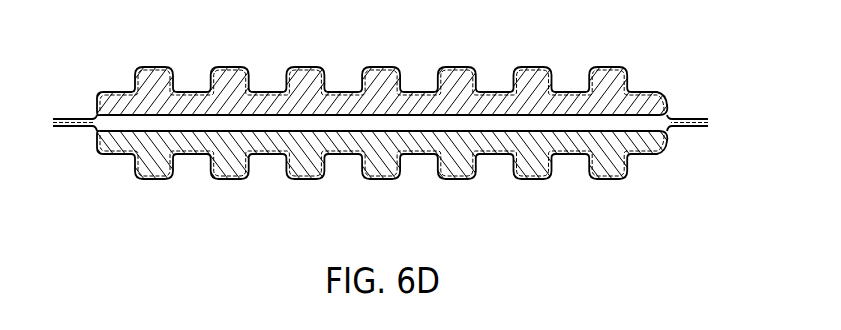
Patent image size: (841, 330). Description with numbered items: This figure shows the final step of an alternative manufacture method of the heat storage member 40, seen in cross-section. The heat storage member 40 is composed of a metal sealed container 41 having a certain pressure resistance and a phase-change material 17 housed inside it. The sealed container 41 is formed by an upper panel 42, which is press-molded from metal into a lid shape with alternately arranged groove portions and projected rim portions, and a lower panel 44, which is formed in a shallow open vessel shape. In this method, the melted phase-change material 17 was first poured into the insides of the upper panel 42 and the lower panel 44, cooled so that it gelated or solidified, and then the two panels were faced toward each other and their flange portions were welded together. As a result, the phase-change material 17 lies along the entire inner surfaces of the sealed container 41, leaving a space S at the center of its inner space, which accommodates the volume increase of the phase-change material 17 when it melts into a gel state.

The heat storage member 40 is at (122, 57).
The sealed container 41 is at (757, 75).
The upper panel 42 is at (643, 89).
The lower panel 44 is at (643, 158).
The space S is at (418, 120).
The phase-change material 17 is at (309, 88).